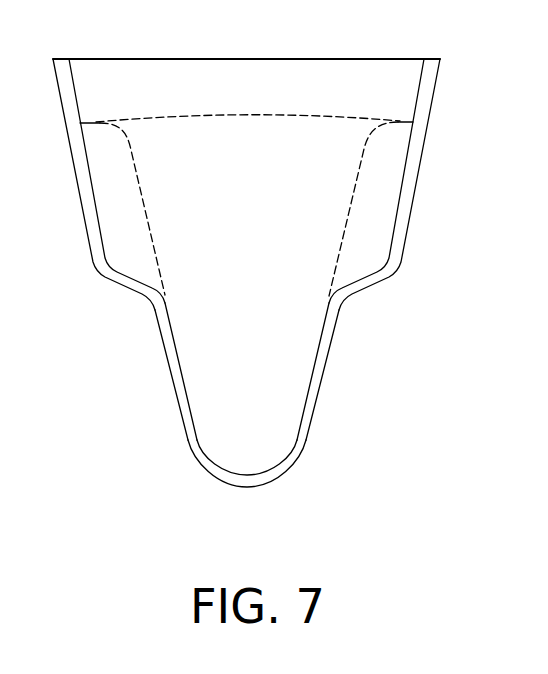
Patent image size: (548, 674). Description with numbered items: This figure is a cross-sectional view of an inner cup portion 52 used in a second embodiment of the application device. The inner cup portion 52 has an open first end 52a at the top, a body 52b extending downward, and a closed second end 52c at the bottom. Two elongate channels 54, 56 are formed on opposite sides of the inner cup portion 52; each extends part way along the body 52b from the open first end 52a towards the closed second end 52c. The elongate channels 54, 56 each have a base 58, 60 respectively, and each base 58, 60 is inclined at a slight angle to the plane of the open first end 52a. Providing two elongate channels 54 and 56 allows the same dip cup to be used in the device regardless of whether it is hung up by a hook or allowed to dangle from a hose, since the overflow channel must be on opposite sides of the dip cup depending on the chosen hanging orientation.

The inner cup portion 52 is at (270, 278).
The open first end 52a is at (422, 59).
The body 52b is at (329, 350).
The closed second end 52c is at (247, 488).
The elongate channel 54 is at (102, 203).
The elongate channel 56 is at (380, 213).
The base 58 is at (127, 276).
The base 60 is at (367, 277).